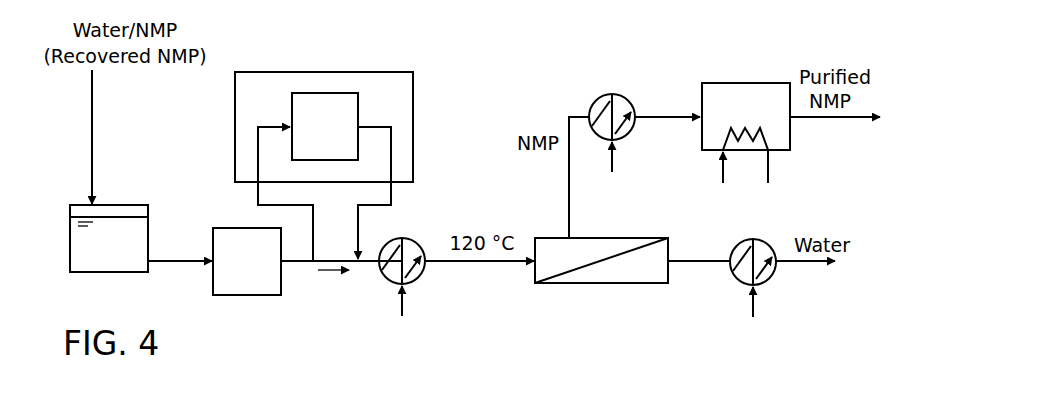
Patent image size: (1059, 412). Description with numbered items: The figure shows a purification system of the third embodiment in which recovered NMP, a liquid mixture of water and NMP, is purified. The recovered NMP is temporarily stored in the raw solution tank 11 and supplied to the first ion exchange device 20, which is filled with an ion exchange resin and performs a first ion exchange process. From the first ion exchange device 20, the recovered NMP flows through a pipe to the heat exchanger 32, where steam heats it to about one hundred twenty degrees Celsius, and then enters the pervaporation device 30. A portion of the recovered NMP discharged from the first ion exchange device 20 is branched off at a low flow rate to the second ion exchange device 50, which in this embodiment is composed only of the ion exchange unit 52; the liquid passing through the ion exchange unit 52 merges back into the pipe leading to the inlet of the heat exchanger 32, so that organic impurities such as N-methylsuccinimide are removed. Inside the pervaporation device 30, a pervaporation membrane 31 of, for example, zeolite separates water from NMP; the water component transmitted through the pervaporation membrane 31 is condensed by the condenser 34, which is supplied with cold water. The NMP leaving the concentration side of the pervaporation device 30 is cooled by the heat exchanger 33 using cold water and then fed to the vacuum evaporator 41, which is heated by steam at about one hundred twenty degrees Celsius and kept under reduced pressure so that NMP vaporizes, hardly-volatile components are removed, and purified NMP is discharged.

The raw solution tank 11 is at (128, 210).
The first ion exchange device 20 is at (223, 232).
The pervaporation device 30 is at (606, 261).
The pervaporation membrane 31 is at (583, 266).
The heat exchanger 32 is at (408, 245).
The heat exchanger 33 is at (600, 101).
The condenser 34 is at (768, 248).
The vacuum evaporator 41 is at (790, 135).
The second ion exchange device 50 is at (351, 164).
The ion exchange unit 52 is at (353, 112).